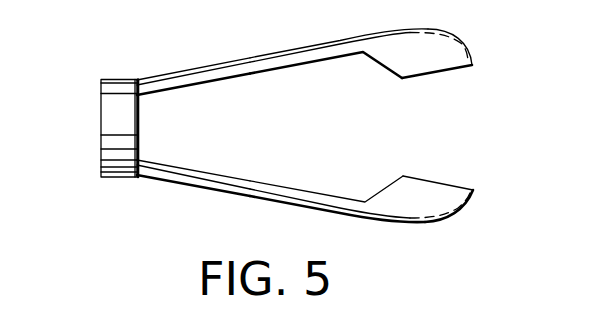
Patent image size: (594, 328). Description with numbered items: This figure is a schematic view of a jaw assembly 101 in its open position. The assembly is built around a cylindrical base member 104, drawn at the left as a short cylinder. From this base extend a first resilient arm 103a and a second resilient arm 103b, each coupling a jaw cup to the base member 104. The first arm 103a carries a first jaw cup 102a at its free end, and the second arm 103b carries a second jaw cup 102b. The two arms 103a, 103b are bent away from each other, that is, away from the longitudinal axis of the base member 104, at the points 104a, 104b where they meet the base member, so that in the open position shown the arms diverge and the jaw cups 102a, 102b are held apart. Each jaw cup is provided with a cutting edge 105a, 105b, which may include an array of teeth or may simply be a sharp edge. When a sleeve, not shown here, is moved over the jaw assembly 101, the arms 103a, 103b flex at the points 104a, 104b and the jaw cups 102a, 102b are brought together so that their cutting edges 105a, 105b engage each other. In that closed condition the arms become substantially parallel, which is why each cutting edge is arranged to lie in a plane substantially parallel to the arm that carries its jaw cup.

The jaw assembly 101 is at (137, 230).
The cylindrical base member 104 is at (112, 82).
The point where the first arm meets the base member 104a is at (137, 80).
The point where the second arm meets the base member 104b is at (142, 160).
The first resilient arm 103a is at (223, 67).
The second resilient arm 103b is at (263, 188).
The first jaw cup 102a is at (455, 45).
The second jaw cup 102b is at (450, 220).
The cutting edge 105a is at (440, 77).
The cutting edge 105b is at (438, 178).